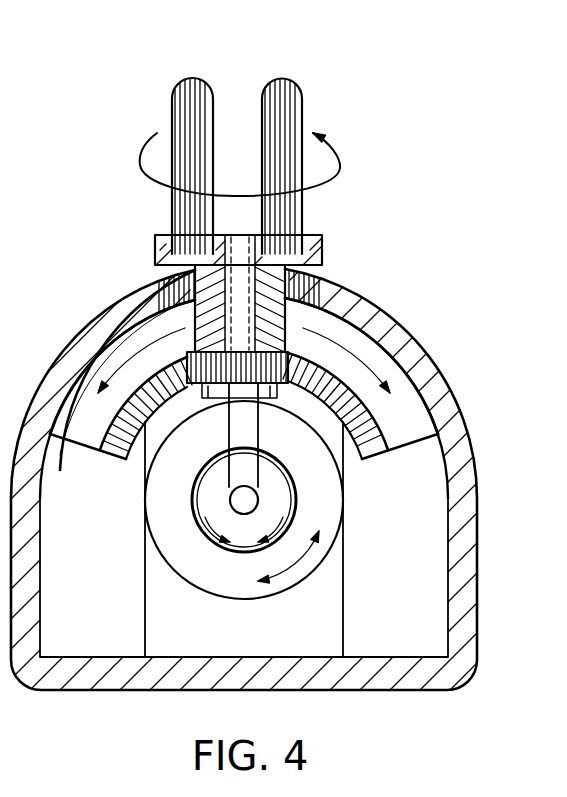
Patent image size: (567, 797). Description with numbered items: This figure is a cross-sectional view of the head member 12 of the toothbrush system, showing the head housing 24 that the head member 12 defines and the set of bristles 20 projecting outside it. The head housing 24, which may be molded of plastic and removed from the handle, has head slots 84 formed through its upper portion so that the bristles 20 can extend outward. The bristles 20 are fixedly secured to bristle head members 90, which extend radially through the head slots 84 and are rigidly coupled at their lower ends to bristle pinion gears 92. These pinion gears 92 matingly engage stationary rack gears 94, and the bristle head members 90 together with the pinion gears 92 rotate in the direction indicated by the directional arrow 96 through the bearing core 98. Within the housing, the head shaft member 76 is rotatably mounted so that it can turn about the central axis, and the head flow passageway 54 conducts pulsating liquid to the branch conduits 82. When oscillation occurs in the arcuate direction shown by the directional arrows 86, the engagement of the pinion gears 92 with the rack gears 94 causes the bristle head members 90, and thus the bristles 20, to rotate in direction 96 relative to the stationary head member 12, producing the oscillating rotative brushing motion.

The head member 12 is at (478, 556).
The bristles 20 is at (272, 82).
The head housing 24 is at (470, 612).
The head flow passageway 54 is at (250, 500).
The head shaft member 76 is at (185, 574).
The branch conduits 82 is at (249, 428).
The head slots 84 is at (398, 325).
The directional arrows 86 is at (118, 362).
The bristle head members 90 is at (324, 256).
The bristle pinion gears 92 is at (327, 310).
The stationary rack gears 94 is at (372, 437).
The directional arrow 96 is at (337, 157).
The bearing core 98 is at (213, 297).